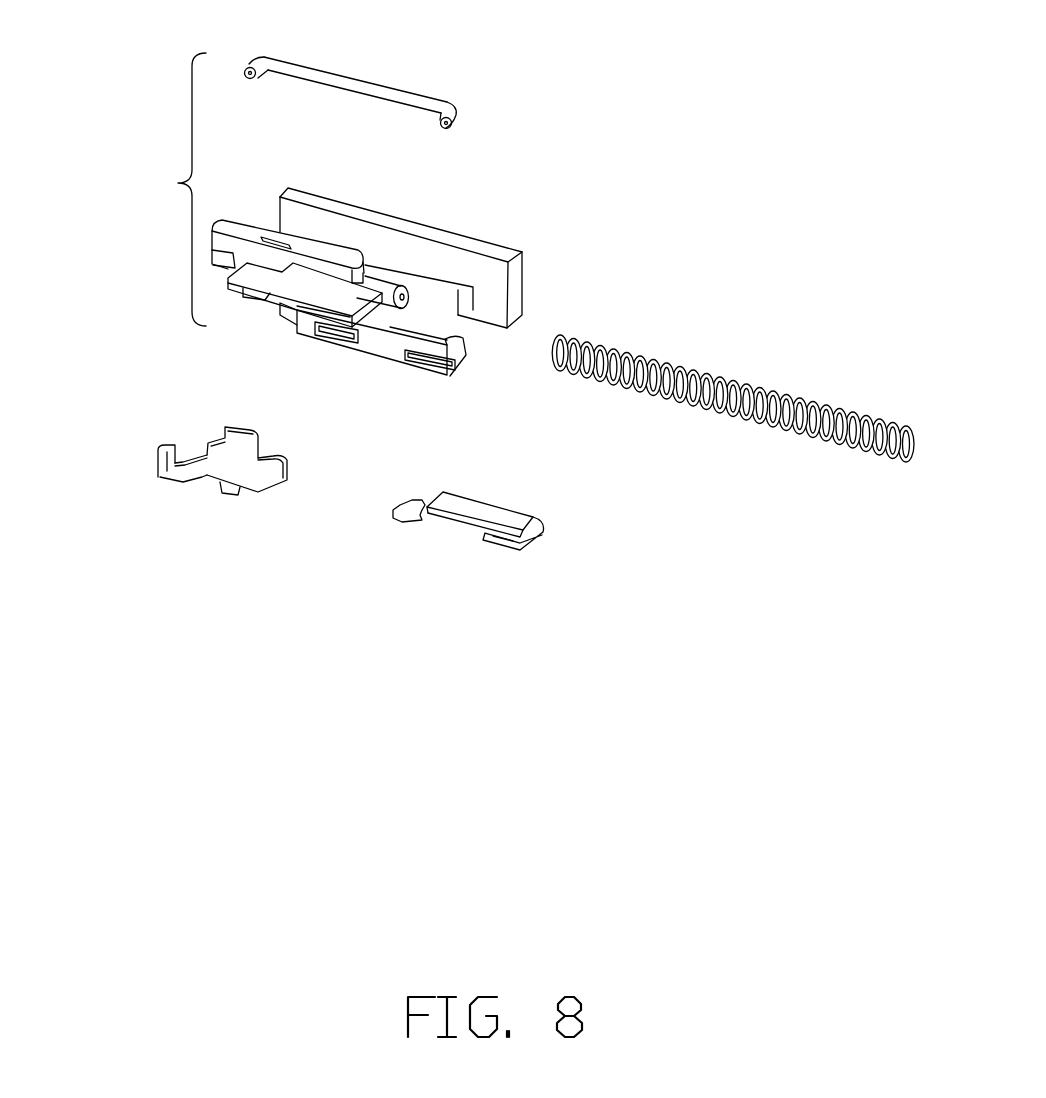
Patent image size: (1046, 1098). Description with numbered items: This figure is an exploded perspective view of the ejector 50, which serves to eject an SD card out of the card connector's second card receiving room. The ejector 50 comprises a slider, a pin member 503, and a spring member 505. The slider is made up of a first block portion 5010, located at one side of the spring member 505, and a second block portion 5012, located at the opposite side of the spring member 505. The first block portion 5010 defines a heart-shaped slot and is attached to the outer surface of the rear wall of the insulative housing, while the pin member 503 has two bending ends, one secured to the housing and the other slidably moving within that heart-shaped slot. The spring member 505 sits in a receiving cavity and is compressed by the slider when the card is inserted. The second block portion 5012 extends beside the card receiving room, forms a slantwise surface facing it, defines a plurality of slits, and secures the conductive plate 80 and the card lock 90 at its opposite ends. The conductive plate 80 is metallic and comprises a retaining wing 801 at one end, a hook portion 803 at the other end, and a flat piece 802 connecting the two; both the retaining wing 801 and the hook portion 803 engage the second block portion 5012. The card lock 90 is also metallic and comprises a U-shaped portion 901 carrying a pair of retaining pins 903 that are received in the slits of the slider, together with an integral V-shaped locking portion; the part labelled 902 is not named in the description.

The ejector 50 is at (170, 189).
The pin member 503 is at (384, 92).
The first block portion 5010 is at (444, 258).
The second block portion 5012 is at (313, 293).
The spring member 505 is at (683, 358).
The card lock 90 is at (208, 486).
The U-shaped portion 901 is at (278, 482).
The upturned end of clip 902 is at (175, 477).
The retaining pins 903 is at (240, 445).
The conductive plate 80 is at (530, 487).
The retaining wing 801 is at (410, 505).
The flat piece 802 is at (473, 508).
The hook portion 803 is at (533, 540).